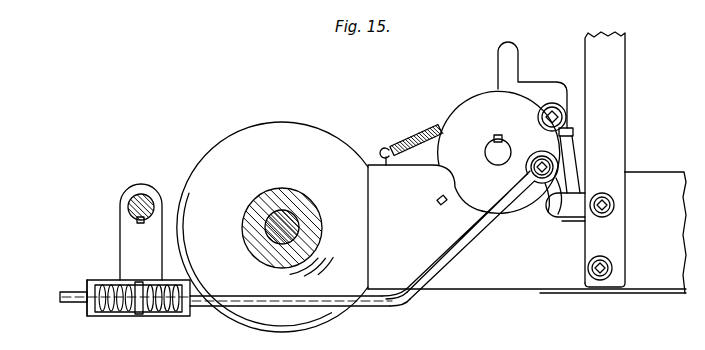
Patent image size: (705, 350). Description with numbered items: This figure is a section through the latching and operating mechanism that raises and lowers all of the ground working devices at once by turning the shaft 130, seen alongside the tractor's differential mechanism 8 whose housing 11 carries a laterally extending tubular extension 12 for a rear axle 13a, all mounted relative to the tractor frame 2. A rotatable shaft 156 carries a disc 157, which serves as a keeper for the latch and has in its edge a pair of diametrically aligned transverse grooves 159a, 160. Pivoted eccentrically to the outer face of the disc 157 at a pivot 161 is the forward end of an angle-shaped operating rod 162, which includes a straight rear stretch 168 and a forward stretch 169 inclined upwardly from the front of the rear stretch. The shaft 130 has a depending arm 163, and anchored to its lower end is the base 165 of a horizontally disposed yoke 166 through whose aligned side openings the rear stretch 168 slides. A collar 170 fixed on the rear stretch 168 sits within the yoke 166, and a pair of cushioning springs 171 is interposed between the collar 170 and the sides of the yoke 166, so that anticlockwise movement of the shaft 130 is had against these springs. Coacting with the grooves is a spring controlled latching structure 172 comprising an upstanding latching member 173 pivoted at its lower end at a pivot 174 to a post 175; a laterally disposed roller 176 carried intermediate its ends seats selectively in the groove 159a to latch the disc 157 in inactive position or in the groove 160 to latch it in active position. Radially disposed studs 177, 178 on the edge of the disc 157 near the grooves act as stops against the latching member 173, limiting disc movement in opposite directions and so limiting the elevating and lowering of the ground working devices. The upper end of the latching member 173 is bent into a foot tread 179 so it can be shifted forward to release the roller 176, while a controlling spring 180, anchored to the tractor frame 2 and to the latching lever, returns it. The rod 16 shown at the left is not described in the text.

The frame 2 is at (641, 292).
The differential mechanism 8 is at (265, 132).
The housing 11 is at (225, 148).
The tubular extension 12 is at (325, 178).
The rear axle 13a is at (265, 220).
The rod 16 is at (43, 288).
The shaft 130 is at (144, 193).
The rotatable shaft 156 is at (485, 152).
The disc 157 is at (445, 121).
The transverse groove 159a is at (540, 122).
The transverse groove 160 is at (450, 178).
The pivot 161 is at (513, 215).
The operating rod 162 is at (363, 312).
The depending arm 163 is at (122, 242).
The base 165 is at (153, 312).
The yoke 166 is at (82, 312).
The straight rear stretch 168 is at (283, 288).
The forward stretch 169 is at (447, 263).
The collar 170 is at (138, 318).
The cushioning springs 171 is at (168, 280).
The spring controlled latching structure 172 is at (570, 63).
The latching member 173 is at (568, 160).
The pivotal connection 174 is at (614, 205).
The post 175 is at (613, 161).
The roller 176 is at (565, 109).
The stud 177 is at (573, 133).
The stud 178 is at (440, 206).
The foot tread 179 is at (498, 62).
The controlling spring 180 is at (398, 131).